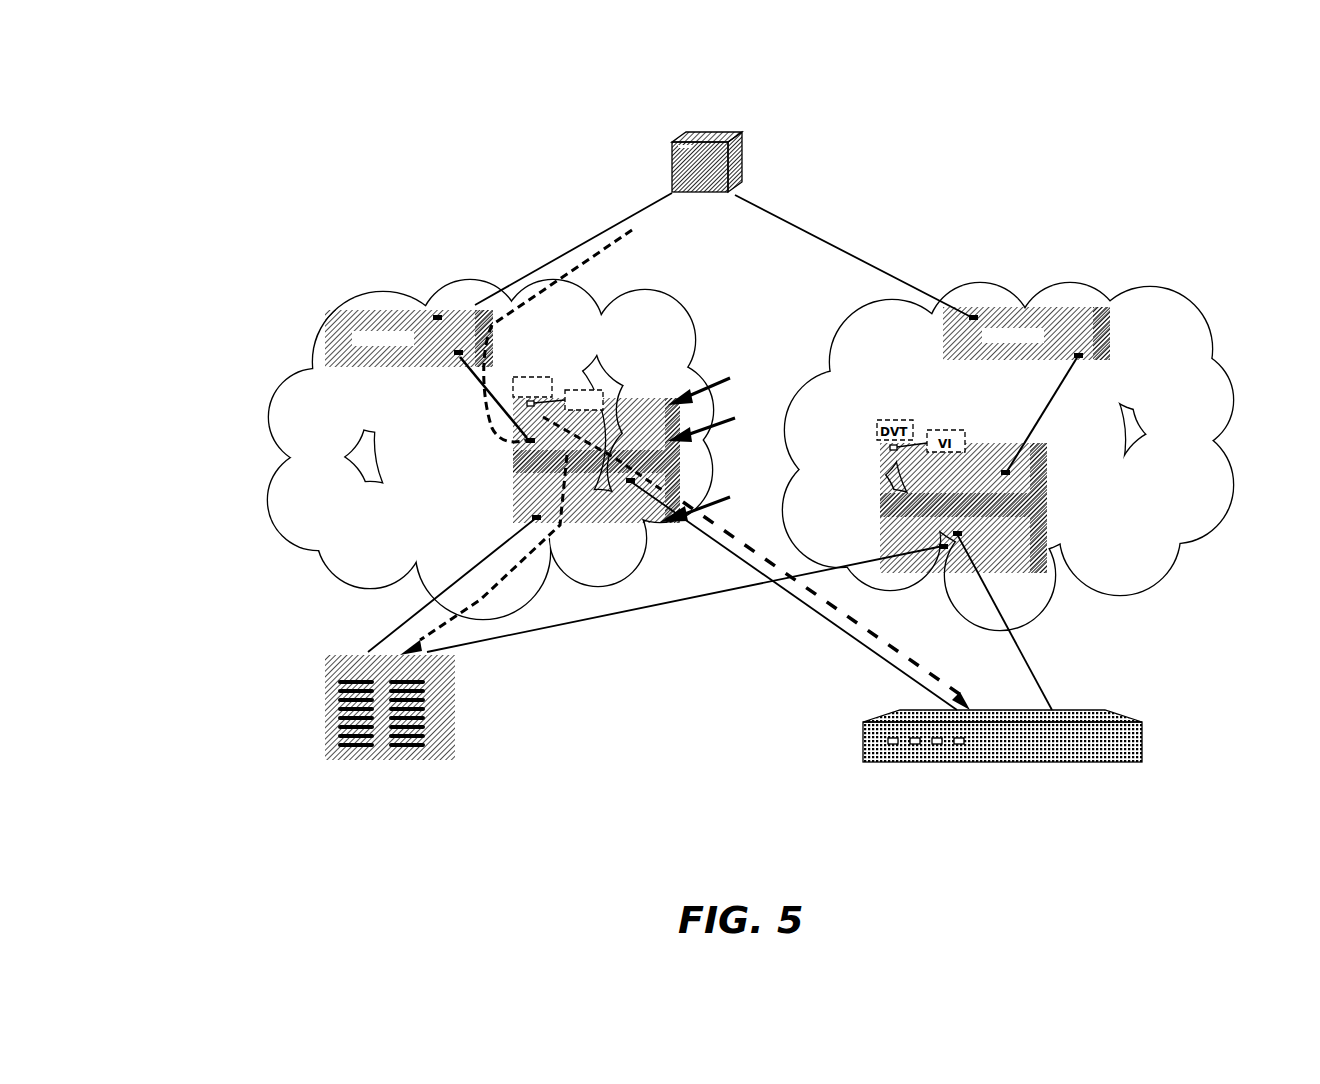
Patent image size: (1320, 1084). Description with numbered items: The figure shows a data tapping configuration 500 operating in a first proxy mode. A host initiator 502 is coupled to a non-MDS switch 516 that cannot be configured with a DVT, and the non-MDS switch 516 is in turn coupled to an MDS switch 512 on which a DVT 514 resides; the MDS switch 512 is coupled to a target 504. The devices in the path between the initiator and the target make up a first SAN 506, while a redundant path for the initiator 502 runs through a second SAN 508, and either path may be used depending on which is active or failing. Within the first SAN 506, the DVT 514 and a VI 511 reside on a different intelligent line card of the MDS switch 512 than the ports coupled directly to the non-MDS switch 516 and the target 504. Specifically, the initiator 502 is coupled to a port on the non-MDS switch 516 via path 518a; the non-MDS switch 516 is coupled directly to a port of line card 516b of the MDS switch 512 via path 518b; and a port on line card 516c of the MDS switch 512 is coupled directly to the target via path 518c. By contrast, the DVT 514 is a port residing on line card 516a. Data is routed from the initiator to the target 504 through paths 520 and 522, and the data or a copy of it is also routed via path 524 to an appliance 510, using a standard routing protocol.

The storage area network system 500 is at (168, 72).
The host initiator 502 is at (672, 154).
The target 504 is at (325, 744).
The first SAN 506 is at (267, 510).
The second SAN 508 is at (1215, 318).
The appliance 510 is at (863, 744).
The VI 511 is at (600, 386).
The MDS switch 512 is at (511, 493).
The DVT 514 is at (511, 404).
The non-MDS switch 516 is at (318, 336).
The line card 516a is at (725, 385).
The line card 516b is at (726, 424).
The line card 516c is at (716, 499).
The path 518a is at (556, 254).
The path 518b is at (464, 360).
The path 518c is at (381, 647).
The path 520 is at (603, 243).
The path 522 is at (550, 540).
The path 524 is at (860, 607).